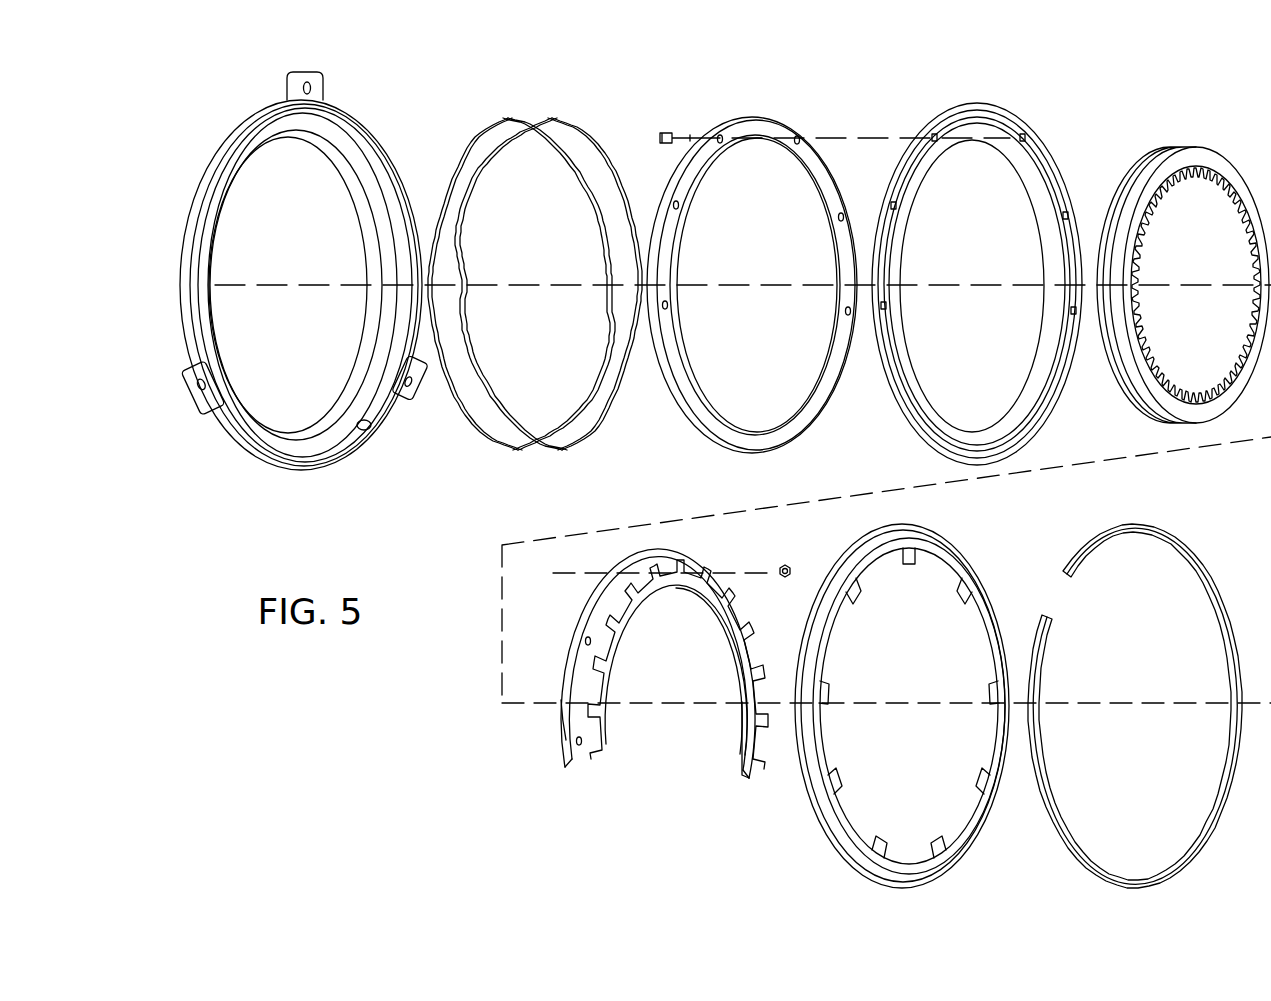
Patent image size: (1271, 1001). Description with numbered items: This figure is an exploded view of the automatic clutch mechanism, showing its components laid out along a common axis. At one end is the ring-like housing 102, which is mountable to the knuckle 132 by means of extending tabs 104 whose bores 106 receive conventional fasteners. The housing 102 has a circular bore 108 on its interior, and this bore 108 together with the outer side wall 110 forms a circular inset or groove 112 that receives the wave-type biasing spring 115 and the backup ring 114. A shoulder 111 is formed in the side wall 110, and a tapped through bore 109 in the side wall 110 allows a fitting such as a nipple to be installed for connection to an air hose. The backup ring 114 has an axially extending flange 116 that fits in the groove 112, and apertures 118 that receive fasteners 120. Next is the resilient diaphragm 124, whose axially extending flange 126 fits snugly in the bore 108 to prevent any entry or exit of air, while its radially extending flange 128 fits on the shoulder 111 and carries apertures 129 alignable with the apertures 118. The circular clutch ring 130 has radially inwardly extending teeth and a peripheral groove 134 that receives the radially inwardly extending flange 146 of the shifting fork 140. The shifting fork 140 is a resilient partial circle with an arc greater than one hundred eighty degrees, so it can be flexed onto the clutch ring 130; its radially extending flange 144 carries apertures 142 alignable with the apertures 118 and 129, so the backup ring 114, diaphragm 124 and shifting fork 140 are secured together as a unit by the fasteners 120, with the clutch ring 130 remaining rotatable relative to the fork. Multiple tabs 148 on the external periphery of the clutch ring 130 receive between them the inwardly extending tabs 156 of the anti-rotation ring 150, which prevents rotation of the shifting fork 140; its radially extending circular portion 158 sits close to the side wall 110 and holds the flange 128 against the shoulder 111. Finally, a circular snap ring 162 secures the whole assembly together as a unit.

The housing 102 is at (268, 470).
The extending tabs 104 is at (290, 85).
The bores 106 is at (308, 84).
The circular bore 108 is at (370, 240).
The tapped through bore 109 is at (367, 432).
The outer side wall 110 is at (372, 160).
The shoulder 111 is at (405, 215).
The circular groove 112 is at (328, 445).
The backup ring 114 is at (752, 455).
The biasing spring 115 is at (500, 440).
The axially extending flange 116 is at (810, 372).
The apertures 118 is at (797, 142).
The fasteners 120 is at (669, 131).
The resilient diaphragm 124 is at (930, 117).
The axially extending flange 126 is at (1040, 230).
The radially extending flange 128 is at (1060, 190).
The apertures 129 is at (1022, 132).
The clutch ring 130 is at (1213, 160).
The knuckle 132 is at (1232, 213).
The groove 134 is at (1118, 352).
The shifting fork 140 is at (650, 600).
The apertures 142 is at (585, 640).
The radially extending flange 144 is at (585, 775).
The radially inwardly extending flange 146 is at (742, 735).
The tabs 148 is at (602, 700).
The anti-rotation ring 150 is at (852, 860).
The inwardly extending tabs 156 is at (882, 848).
The radially extending circular portion 158 is at (902, 876).
The circular snap ring 162 is at (1082, 865).